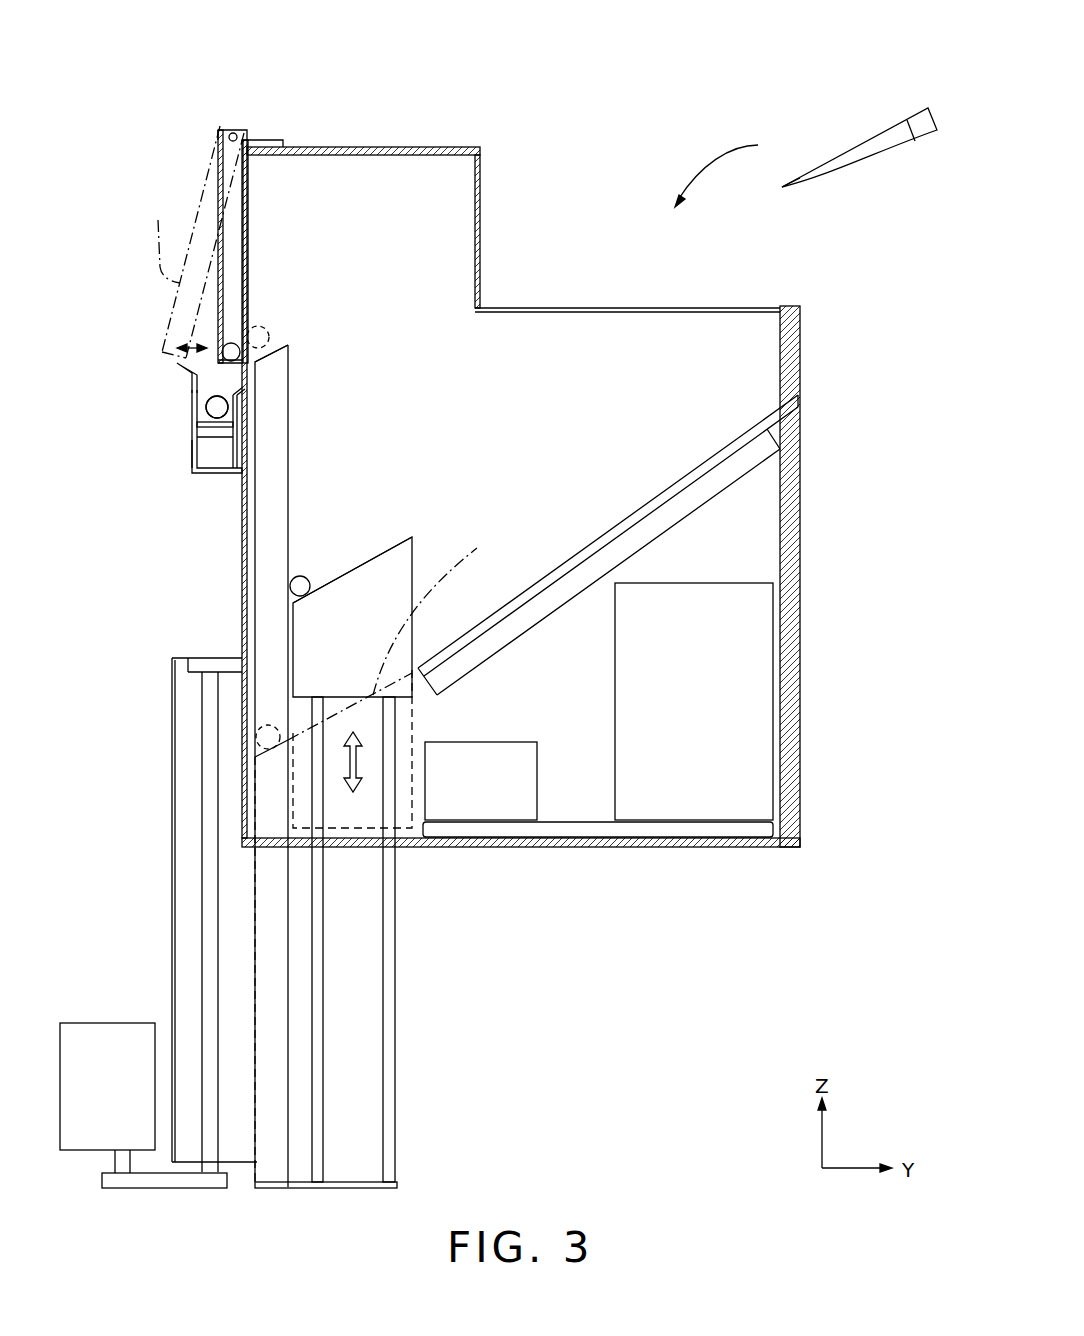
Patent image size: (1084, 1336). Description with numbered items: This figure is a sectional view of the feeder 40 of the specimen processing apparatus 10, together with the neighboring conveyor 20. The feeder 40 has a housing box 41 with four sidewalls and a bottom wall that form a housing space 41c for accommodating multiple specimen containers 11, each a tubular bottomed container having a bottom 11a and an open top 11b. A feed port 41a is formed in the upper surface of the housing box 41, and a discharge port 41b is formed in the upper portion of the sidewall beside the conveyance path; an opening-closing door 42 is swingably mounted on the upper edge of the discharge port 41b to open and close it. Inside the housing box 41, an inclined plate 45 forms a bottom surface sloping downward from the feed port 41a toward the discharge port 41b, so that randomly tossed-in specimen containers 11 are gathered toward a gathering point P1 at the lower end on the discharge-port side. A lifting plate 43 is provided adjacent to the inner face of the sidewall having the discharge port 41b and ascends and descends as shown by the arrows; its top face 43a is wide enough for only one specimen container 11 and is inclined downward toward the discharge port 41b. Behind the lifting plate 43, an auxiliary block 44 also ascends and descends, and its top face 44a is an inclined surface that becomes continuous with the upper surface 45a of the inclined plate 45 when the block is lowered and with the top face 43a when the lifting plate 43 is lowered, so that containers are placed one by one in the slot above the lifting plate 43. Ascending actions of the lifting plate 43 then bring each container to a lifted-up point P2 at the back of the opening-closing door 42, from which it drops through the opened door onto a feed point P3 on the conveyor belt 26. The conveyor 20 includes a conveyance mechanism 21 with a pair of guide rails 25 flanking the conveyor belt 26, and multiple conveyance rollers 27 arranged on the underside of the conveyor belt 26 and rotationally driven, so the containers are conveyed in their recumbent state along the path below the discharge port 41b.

The specimen processing apparatus 10 is at (626, 85).
The specimen container 11 is at (853, 140).
The bottom 11a is at (777, 193).
The open top 11b is at (920, 122).
The conveyor 20 is at (188, 428).
The conveyance mechanism 21 is at (188, 438).
The guide rails 25 is at (188, 413).
The conveyor belt 26 is at (222, 405).
The conveyance rollers 27 is at (227, 430).
The feeder 40 is at (695, 848).
The housing box 41 is at (800, 532).
The feed port 41a is at (572, 308).
The discharge port 41b is at (243, 225).
The housing space 41c is at (462, 490).
The opening-closing door 42 is at (218, 260).
The lifting plate 43 is at (278, 473).
The top face 43a is at (273, 340).
The auxiliary block 44 is at (326, 582).
The top face 44a is at (373, 552).
The inclined plate 45 is at (575, 548).
The upper surface 45a is at (645, 500).
The gathering point P1 is at (258, 722).
The lifted-up point P2 is at (245, 325).
The feed point P3 is at (197, 413).